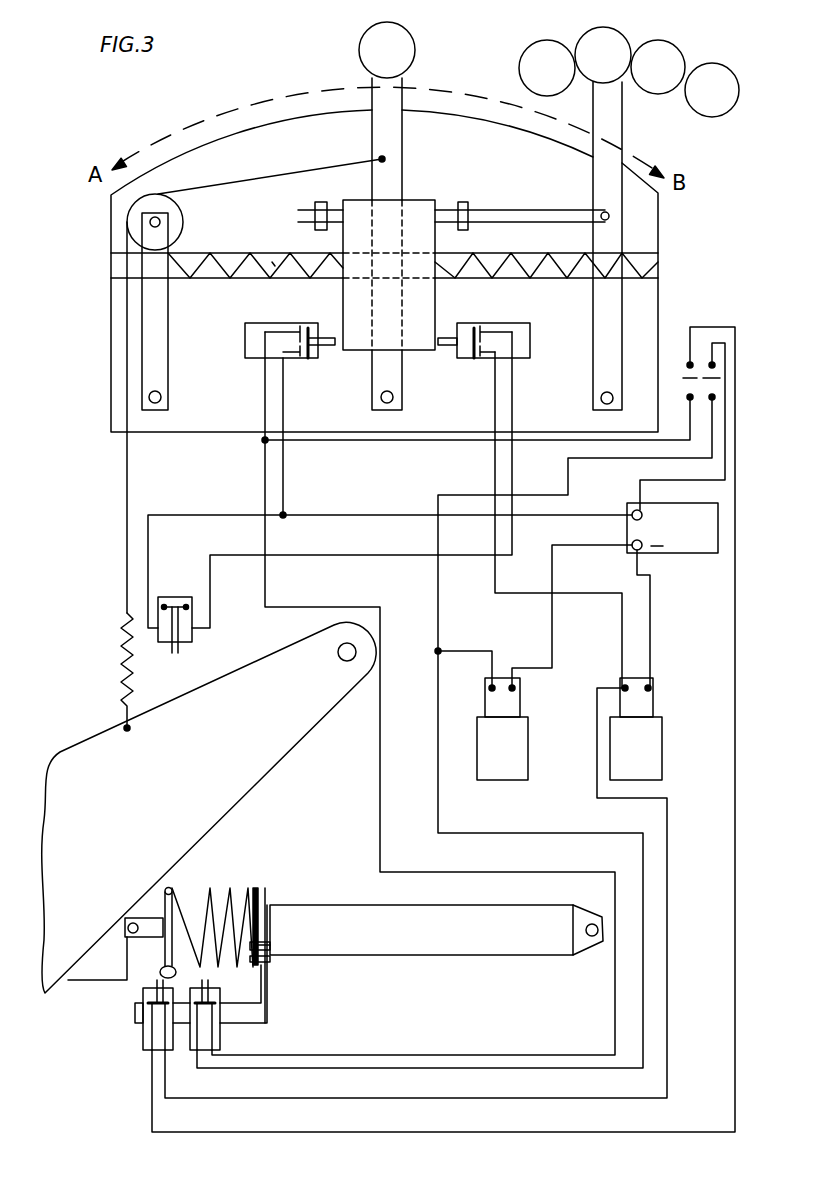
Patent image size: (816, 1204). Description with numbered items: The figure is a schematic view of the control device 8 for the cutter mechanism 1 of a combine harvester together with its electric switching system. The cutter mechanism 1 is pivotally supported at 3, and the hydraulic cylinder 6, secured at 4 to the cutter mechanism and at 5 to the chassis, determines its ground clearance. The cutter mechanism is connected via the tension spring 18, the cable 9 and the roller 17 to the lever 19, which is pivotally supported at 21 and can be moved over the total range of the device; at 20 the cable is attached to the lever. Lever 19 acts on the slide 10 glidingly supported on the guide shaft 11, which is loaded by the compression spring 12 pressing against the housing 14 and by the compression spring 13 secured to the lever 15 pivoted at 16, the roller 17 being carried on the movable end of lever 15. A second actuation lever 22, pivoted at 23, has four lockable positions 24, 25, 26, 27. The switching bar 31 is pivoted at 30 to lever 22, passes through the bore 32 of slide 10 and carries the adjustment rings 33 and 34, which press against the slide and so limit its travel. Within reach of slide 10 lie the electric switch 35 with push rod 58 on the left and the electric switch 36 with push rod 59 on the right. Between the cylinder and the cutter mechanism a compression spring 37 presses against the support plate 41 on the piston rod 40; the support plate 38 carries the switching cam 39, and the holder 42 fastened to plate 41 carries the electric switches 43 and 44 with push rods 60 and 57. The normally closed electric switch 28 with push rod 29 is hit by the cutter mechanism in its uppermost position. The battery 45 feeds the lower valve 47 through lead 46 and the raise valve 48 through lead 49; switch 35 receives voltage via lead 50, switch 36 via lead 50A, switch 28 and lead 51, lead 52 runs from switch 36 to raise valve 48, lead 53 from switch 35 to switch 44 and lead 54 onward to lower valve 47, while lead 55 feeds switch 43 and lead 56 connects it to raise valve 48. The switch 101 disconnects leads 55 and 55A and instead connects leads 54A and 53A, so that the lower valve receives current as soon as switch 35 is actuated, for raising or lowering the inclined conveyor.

The cutter mechanism 1 is at (104, 735).
The pivot 3 is at (352, 660).
The cylinder attachment point 4 is at (128, 930).
The cylinder attachment point 5 is at (600, 925).
The hydraulic cylinder 6 is at (358, 905).
The control device 8 is at (669, 268).
The cable 9 is at (125, 505).
The slide 10 is at (420, 203).
The guide shaft 11 is at (270, 262).
The compression spring 12 is at (565, 280).
The compression spring 13 is at (200, 252).
The housing 14 is at (660, 222).
The lever 15 is at (158, 334).
The pivot 16 is at (162, 397).
The roller 17 is at (183, 220).
The tension spring 18 is at (120, 628).
The lever 19 is at (372, 136).
The cable attachment 20 is at (380, 162).
The pivot 21 is at (394, 397).
The actuation lever 22 is at (620, 128).
The pivot 23 is at (600, 398).
The adjustment position 24 is at (548, 52).
The adjustment position 25 is at (602, 40).
The adjustment position 26 is at (658, 45).
The adjustment position 27 is at (710, 73).
The electric switch 28 is at (175, 606).
The push rod 29 is at (182, 652).
The pivot 30 is at (609, 216).
The switching bar 31 is at (543, 210).
The bore 32 is at (437, 210).
The adjustment ring 33 is at (312, 208).
The adjustment ring 34 is at (468, 205).
The electric switch 35 is at (256, 316).
The electric switch 36 is at (513, 326).
The compression spring 37 is at (212, 890).
The support plate 38 is at (168, 892).
The switching cam 39 is at (162, 972).
The piston rod 40 is at (265, 895).
The support plate 41 is at (255, 888).
The holder 42 is at (270, 985).
The electric switch 43 is at (143, 1045).
The electric switch 44 is at (222, 1040).
The battery 45 is at (682, 556).
The lead 46 is at (553, 648).
The lower valve 47 is at (528, 758).
The raise valve 48 is at (662, 758).
The lead 49 is at (650, 655).
The lead 50 is at (286, 484).
The lead 50A is at (170, 515).
The lead 51 is at (513, 488).
The lead 52 is at (493, 462).
The lead 53 is at (263, 443).
The lead 53A is at (430, 442).
The lead 54 is at (536, 833).
The lead 54A is at (652, 458).
The lead 55 is at (735, 712).
The lead 55A is at (640, 482).
The lead 56 is at (670, 850).
The push rod 57 is at (205, 985).
The push rod 58 is at (325, 336).
The push rod 59 is at (448, 338).
The push rod 60 is at (153, 980).
The switch 101 is at (685, 378).